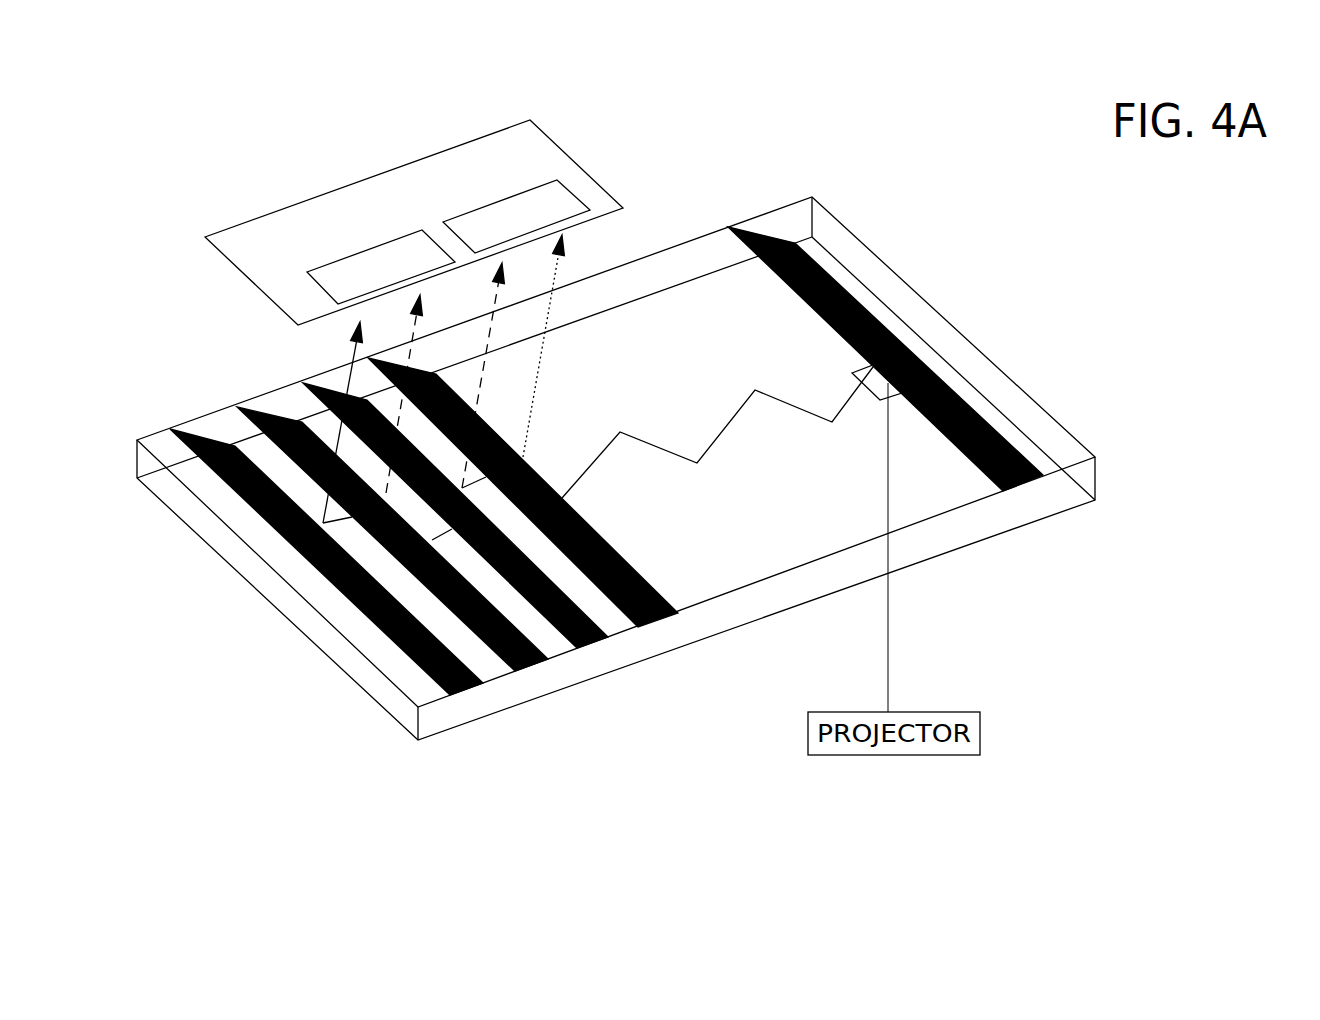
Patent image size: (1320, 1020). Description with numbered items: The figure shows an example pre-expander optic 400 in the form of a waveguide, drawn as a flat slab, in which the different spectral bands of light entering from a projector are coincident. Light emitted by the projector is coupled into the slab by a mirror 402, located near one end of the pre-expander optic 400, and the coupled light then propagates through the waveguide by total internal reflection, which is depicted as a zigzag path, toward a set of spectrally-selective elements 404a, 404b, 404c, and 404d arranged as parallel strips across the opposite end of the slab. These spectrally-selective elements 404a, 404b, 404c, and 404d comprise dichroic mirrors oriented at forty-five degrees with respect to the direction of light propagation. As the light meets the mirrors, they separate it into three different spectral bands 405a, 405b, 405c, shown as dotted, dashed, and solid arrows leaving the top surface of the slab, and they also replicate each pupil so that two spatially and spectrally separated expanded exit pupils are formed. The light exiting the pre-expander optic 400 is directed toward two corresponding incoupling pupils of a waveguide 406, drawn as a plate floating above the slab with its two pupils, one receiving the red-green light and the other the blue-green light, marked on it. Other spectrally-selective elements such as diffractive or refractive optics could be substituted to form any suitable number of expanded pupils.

The pre-expander optic 400 is at (1175, 519).
The mirror 402 is at (762, 233).
The spectrally-selective element 404a is at (482, 685).
The spectrally-selective element 404b is at (548, 660).
The spectrally-selective element 404c is at (608, 637).
The spectrally-selective element 404d is at (677, 613).
The spectral band 405a is at (540, 377).
The spectral band 405b is at (478, 381).
The spectral band 405c is at (356, 347).
The waveguide 406 is at (572, 158).